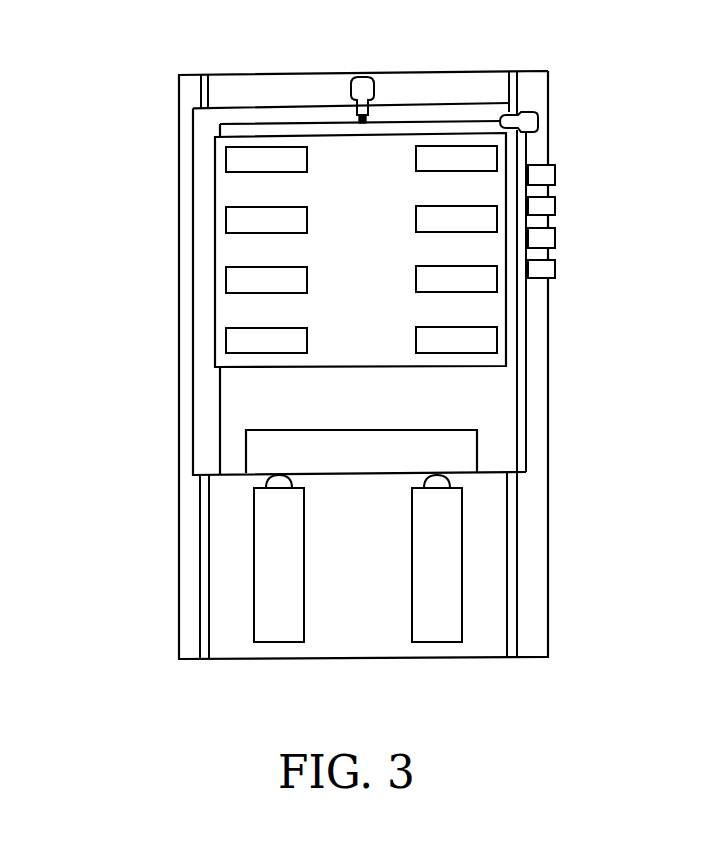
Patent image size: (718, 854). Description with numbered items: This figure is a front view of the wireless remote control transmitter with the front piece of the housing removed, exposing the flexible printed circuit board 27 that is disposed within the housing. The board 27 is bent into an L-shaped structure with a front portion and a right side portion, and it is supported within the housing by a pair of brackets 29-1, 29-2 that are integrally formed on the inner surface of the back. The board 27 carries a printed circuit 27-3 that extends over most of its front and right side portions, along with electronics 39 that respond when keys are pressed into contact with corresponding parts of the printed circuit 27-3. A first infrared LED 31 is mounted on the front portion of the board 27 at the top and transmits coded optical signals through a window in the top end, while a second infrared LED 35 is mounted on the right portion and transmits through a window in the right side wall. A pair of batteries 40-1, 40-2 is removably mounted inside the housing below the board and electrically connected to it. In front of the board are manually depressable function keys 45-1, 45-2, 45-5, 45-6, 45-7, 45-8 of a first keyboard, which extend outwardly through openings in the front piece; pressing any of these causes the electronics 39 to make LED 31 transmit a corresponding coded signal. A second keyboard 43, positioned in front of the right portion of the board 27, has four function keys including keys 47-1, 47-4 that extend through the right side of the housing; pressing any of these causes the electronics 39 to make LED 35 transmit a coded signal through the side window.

The flexible printed circuit board 27 is at (205, 212).
The printed circuit 27-3 is at (387, 422).
The bracket 29-1 is at (200, 505).
The bracket 29-2 is at (515, 508).
The first infrared LED 31 is at (362, 88).
The second infrared LED 35 is at (534, 117).
The electronics 39 is at (449, 464).
The battery 40-1 is at (270, 630).
The battery 40-2 is at (435, 633).
The keyboard 43 is at (528, 440).
The function key 45-1 is at (245, 157).
The function key 45-2 is at (433, 157).
The function key 45-5 is at (243, 278).
The function key 45-6 is at (430, 277).
The function key 45-7 is at (243, 338).
The function key 45-8 is at (430, 333).
The function key 47-1 is at (558, 166).
The function key 47-4 is at (558, 270).